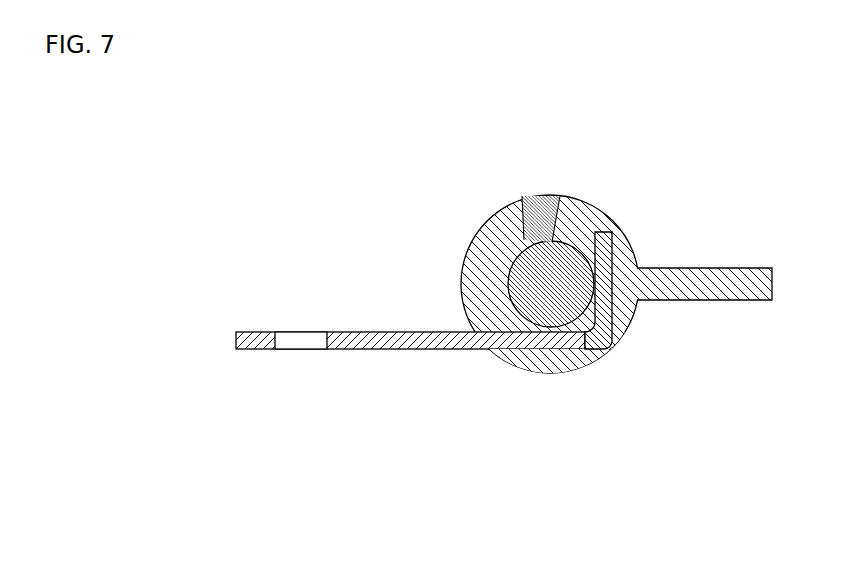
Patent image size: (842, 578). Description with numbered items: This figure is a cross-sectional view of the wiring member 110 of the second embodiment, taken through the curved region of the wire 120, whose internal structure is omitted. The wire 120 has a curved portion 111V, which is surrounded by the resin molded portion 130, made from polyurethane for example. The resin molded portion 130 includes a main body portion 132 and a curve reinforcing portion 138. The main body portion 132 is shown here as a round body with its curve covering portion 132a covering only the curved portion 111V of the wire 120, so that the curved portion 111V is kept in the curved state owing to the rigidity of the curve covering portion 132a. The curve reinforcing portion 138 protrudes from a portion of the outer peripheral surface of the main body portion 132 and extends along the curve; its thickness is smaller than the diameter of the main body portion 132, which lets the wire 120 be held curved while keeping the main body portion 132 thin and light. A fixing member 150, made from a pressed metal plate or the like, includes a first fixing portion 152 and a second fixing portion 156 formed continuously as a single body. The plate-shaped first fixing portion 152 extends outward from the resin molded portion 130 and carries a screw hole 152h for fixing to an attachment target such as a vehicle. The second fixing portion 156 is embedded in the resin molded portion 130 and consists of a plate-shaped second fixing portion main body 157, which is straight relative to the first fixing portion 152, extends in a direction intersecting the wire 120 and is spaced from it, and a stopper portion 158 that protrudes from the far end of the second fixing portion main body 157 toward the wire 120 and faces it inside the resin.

The wiring member 110 is at (594, 160).
The curved portion 111V is at (522, 196).
The wire 120 is at (560, 196).
The resin molded portion 130 is at (631, 214).
The main body portion 132 is at (463, 290).
The curve covering portion 132a is at (472, 243).
The curve reinforcing portion 138 is at (742, 268).
The fixing member 150 is at (602, 478).
The first fixing portion 152 is at (455, 350).
The screw hole 152h is at (293, 348).
The second fixing portion 156 is at (633, 438).
The second fixing portion main body 157 is at (538, 372).
The stopper portion 158 is at (634, 323).